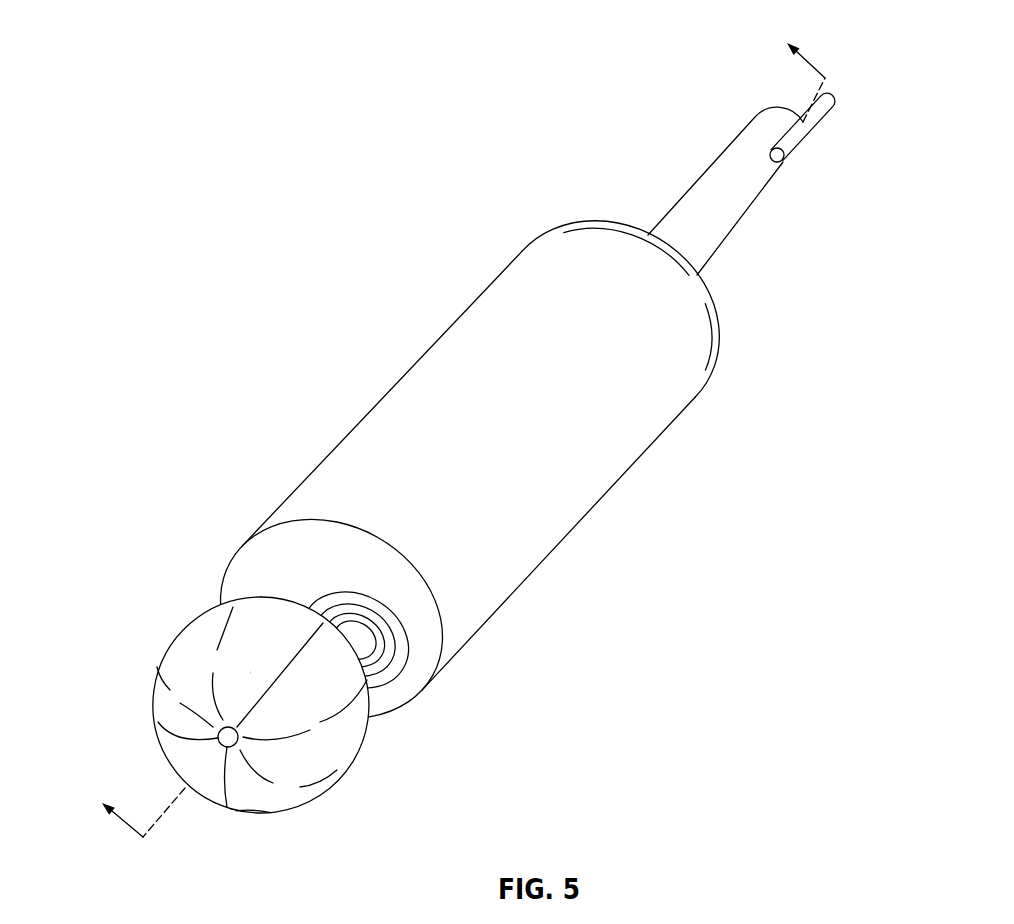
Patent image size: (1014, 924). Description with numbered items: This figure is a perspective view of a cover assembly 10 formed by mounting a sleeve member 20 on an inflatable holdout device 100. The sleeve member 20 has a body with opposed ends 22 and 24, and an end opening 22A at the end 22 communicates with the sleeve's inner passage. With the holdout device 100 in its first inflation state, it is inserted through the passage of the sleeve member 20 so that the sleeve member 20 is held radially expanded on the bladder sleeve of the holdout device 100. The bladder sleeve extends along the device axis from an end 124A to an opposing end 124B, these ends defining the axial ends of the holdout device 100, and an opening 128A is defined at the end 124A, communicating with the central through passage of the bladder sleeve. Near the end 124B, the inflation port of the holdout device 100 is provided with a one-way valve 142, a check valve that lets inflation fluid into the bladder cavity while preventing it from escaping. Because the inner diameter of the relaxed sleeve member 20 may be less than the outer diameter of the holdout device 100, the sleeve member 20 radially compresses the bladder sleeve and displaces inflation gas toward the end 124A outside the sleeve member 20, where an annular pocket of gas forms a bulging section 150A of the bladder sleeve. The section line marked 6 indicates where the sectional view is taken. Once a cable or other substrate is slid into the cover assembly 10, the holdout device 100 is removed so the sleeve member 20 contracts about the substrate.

The cover assembly 10 is at (123, 214).
The sleeve member 20 is at (622, 489).
The end of sleeve member 22 is at (258, 560).
The end opening 22A is at (338, 605).
The end of sleeve member 24 is at (713, 303).
The holdout device 100 is at (372, 786).
The end of bladder sleeve 124A is at (142, 680).
The end of bladder sleeve 124B is at (740, 110).
The opening 128A is at (218, 735).
The one-way valve 142 is at (815, 120).
The bulging section 150A is at (270, 798).
The section line 6- 6 is at (454, 428).